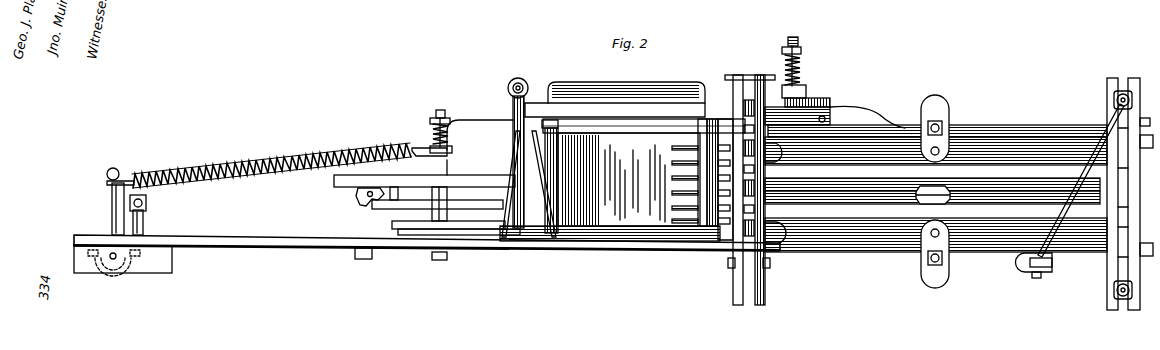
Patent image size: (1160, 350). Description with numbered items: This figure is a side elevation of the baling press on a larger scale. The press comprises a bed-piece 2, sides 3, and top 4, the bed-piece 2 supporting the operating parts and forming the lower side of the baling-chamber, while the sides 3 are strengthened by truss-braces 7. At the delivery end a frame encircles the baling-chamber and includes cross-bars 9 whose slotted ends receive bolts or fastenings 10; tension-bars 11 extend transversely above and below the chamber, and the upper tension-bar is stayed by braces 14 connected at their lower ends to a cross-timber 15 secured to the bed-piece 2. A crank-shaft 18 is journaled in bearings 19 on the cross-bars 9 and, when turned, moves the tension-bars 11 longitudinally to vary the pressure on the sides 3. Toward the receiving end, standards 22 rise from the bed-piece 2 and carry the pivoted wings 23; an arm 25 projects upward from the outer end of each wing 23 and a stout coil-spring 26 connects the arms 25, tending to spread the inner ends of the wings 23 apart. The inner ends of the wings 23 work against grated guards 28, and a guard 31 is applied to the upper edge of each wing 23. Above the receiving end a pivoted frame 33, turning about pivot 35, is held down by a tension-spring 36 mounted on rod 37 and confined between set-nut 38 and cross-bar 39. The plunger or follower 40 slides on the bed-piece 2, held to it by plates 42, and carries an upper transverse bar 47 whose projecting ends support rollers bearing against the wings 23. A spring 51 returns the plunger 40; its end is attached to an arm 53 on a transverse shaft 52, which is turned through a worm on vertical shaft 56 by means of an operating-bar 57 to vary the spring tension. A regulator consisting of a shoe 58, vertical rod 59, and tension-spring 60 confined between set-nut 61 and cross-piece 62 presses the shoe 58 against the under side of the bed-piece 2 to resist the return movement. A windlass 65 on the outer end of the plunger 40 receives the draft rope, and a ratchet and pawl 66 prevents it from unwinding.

The bed-piece 2 is at (471, 250).
The sides 3 is at (893, 189).
The top 4 is at (984, 133).
The truss-braces 7 is at (830, 193).
The cross-bars 9 is at (1120, 120).
The bolts or fastenings 10 is at (1107, 118).
The tension-bars 11 is at (1133, 98).
The braces 14 is at (1098, 140).
The cross-timber 15 is at (1051, 274).
The crank-shaft 18 is at (556, 226).
The bearings 19 is at (556, 198).
The standards 22 is at (548, 166).
The wings 23 is at (629, 181).
The arm 25 is at (512, 102).
The coil-spring 26 is at (527, 85).
The guards 28 is at (672, 178).
The guard 31 is at (615, 99).
The pivoted frame 33 is at (813, 103).
The pivot 35 is at (836, 114).
The tension-spring 36 is at (801, 67).
The rod 37 is at (798, 40).
The set-nut 38 is at (801, 51).
The cross-bar 39 is at (806, 92).
The plunger or follower 40 is at (468, 182).
The plates 42 is at (436, 240).
The upper transverse bar 47 is at (560, 131).
The spring 51 is at (266, 176).
The shaft 52 is at (115, 260).
The arm 53 is at (118, 208).
The vertical shaft 56 is at (143, 222).
The operating-bar 57 is at (146, 203).
The shoe 58 is at (449, 258).
The vertical rod 59 is at (442, 110).
The tension-spring 60 is at (433, 127).
The set-nut 61 is at (449, 120).
The cross-piece 62 is at (452, 149).
The windlass 65 is at (362, 202).
The ratchet and pawl 66 is at (420, 157).